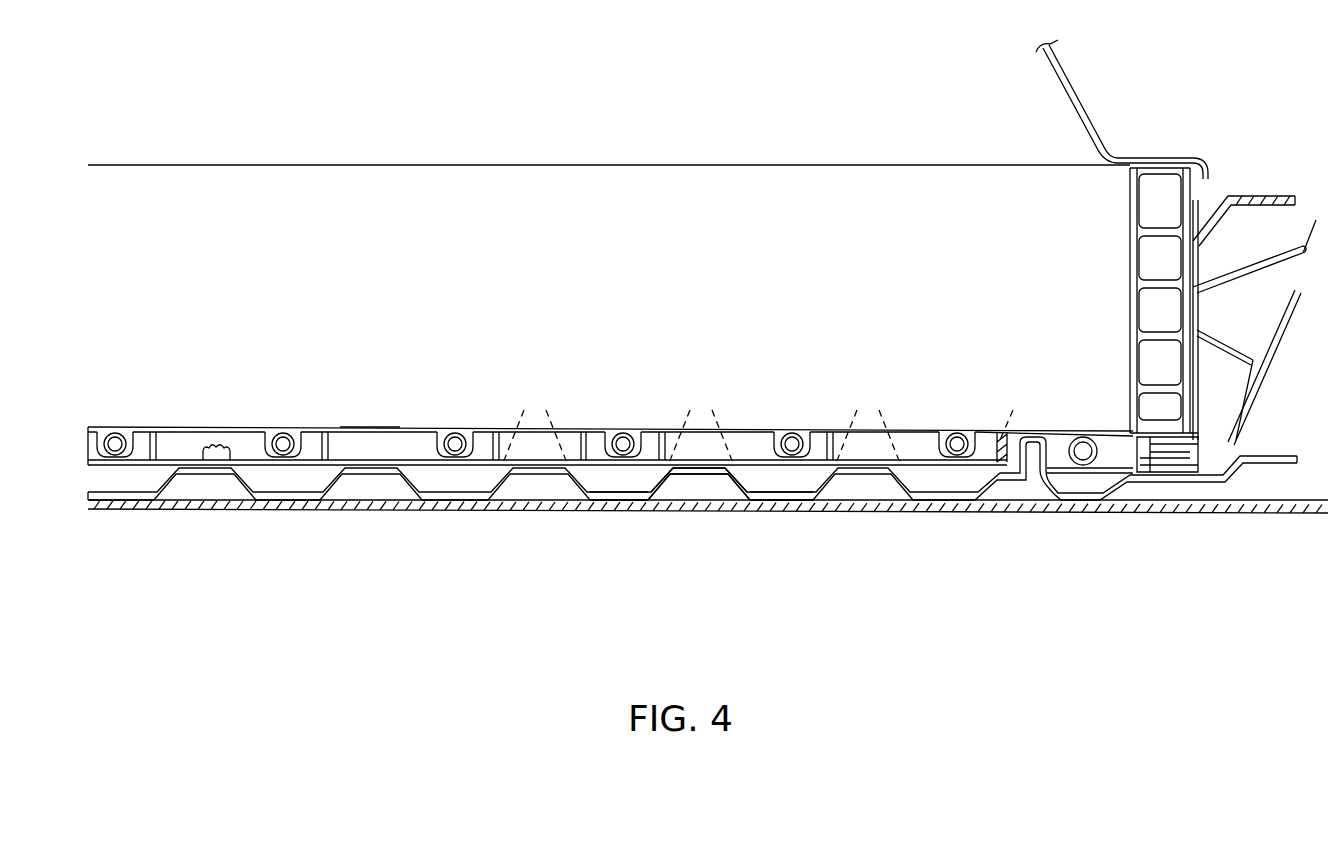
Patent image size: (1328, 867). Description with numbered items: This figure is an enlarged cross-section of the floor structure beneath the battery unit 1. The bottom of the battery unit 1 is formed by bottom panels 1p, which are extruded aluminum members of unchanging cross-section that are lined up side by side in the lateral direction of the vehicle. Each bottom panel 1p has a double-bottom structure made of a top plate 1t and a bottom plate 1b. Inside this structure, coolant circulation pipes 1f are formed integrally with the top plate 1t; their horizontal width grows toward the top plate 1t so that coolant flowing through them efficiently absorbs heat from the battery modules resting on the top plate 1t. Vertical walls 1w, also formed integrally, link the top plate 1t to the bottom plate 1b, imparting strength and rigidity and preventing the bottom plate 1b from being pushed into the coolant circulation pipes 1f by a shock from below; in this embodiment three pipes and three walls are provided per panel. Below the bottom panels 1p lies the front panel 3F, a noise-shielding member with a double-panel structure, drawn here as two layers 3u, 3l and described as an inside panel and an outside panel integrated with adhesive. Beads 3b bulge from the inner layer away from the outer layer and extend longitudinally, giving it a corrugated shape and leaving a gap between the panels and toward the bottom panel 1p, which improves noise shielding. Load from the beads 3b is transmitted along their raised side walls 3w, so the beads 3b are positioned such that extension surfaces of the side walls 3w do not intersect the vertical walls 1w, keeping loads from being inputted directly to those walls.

The battery unit 1 is at (576, 177).
The bottom panel 1p is at (610, 391).
The vertical wall 1w is at (334, 427).
The top plate 1t is at (375, 427).
The bottom plate 1b is at (411, 427).
The coolant circulation pipe 1f is at (455, 401).
The front panel 3F is at (708, 522).
The upper plate of floor 3u is at (692, 518).
The lower plate of floor 3l is at (880, 513).
The raised side wall 3w is at (621, 507).
The bead 3b is at (698, 507).